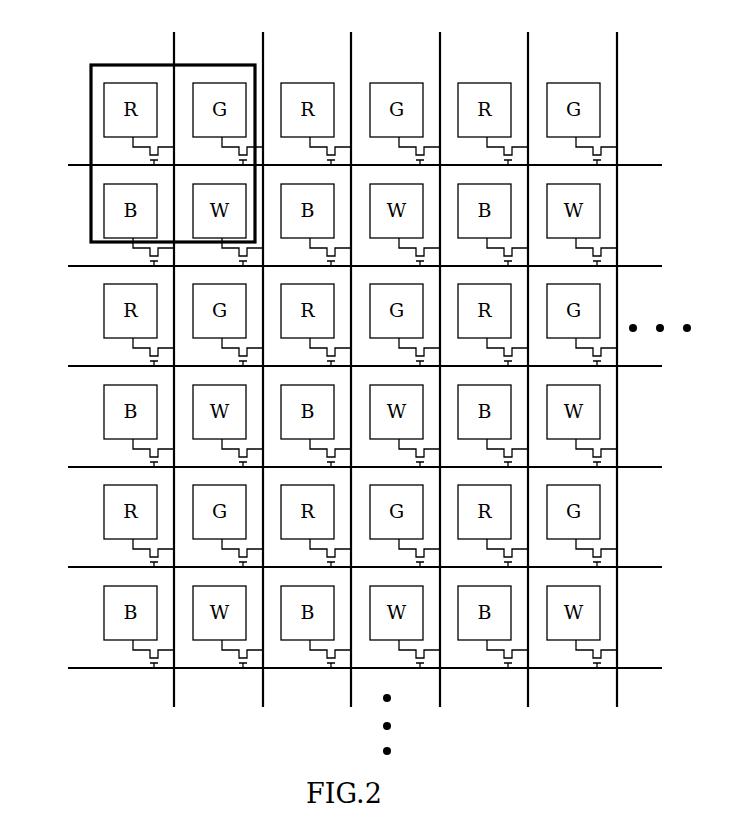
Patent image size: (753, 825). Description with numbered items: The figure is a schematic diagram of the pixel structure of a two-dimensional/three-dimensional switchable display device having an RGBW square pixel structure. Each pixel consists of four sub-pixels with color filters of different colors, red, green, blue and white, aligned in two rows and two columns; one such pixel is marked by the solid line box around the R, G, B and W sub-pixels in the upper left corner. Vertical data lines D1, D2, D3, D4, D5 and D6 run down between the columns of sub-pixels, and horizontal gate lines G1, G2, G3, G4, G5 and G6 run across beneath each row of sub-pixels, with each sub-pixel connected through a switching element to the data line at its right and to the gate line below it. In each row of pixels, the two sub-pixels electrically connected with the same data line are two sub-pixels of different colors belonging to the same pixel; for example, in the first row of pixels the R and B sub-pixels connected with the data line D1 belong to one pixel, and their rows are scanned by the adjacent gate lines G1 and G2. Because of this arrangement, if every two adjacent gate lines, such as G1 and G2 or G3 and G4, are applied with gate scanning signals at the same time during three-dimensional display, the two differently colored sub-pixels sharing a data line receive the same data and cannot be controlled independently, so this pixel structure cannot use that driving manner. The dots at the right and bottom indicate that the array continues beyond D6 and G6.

The data line D1 is at (174, 356).
The data line D2 is at (263, 356).
The data line D3 is at (351, 356).
The data line D4 is at (440, 356).
The data line D5 is at (528, 356).
The data line D6 is at (617, 356).
The gate line G1 is at (348, 165).
The gate line G2 is at (348, 266).
The gate line G3 is at (348, 366).
The gate line G4 is at (348, 467).
The gate line G5 is at (348, 567).
The gate line G6 is at (348, 668).